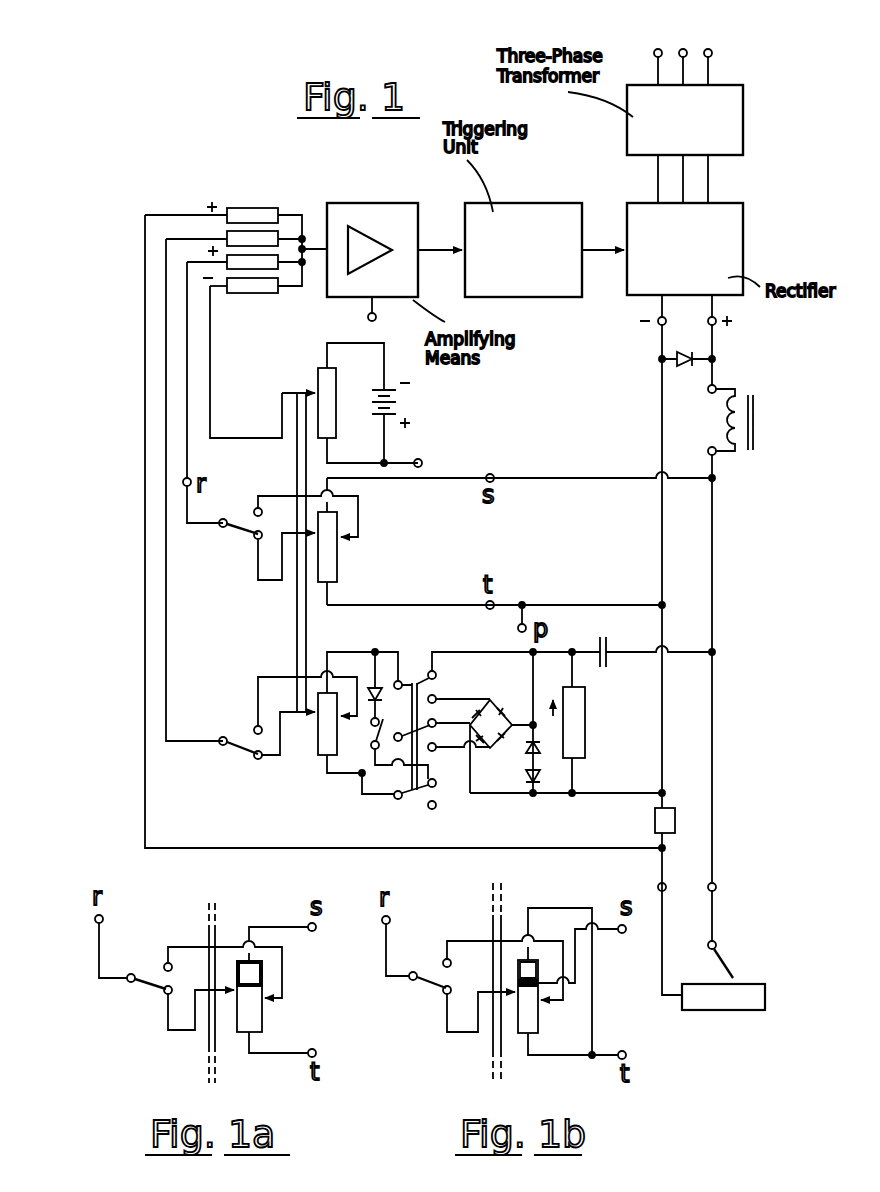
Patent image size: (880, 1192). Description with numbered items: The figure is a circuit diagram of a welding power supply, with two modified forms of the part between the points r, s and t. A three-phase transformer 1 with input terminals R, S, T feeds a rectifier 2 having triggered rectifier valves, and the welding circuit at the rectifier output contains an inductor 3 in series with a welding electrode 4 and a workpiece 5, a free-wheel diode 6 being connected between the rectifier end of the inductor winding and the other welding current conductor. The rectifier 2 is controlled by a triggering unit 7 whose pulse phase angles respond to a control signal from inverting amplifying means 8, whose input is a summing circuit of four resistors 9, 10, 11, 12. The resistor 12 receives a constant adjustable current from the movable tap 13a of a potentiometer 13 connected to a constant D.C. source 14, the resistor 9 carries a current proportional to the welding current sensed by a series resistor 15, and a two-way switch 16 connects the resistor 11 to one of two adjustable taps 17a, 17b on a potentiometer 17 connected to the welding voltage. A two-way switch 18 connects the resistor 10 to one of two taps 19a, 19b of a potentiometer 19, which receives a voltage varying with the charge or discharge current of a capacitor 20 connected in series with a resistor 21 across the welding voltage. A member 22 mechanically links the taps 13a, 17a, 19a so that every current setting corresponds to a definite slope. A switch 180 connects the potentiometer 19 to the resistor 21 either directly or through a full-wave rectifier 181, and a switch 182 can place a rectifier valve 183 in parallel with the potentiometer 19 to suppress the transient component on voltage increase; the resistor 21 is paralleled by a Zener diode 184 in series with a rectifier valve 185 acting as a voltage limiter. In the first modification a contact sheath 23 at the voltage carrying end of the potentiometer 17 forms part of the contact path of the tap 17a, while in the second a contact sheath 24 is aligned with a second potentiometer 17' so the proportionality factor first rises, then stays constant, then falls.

In FIG. 1, the three-phase transformer 1 is at (744, 106).
In FIG. 1, the rectifier 2 is at (745, 244).
In FIG. 1, the inductor 3 is at (758, 410).
In FIG. 1, the welding electrode 4 is at (725, 958).
In FIG. 1, the workpiece 5 is at (725, 1010).
In FIG. 1, the free-wheel diode 6 is at (683, 366).
In FIG. 1, the triggering unit 7 is at (535, 212).
In FIG. 1, the amplifying means 8 is at (381, 207).
In FIG. 1, the resistor 9 is at (239, 210).
In FIG. 1, the resistor 10 is at (273, 238).
In FIG. 1, the resistor 11 is at (227, 262).
In FIG. 1, the resistor 12 is at (272, 291).
In FIG. 1, the potentiometer 13 is at (317, 370).
In FIG. 1, the movable tap 13a is at (315, 392).
In FIG. 1, the source of constant D.C. voltage 14 is at (400, 405).
In FIG. 1, the resistor 15 is at (655, 820).
In FIG. 1, the two-way switch 16 is at (240, 527).
In FIG. 1, the potentiometer 17 is at (355, 541).
In FIG. 1A, the potentiometer 17 is at (285, 990).
In FIG. 1B, the potentiometer 17 is at (568, 997).
In FIG. 1, the adjustable tap 17a is at (313, 535).
In FIG. 1A, the adjustable tap 17a is at (228, 984).
In FIG. 1B, the adjustable tap 17a is at (470, 1000).
In FIG. 1, the adjustable tap 17b is at (340, 537).
In FIG. 1B, the second potentiometer 17' is at (544, 923).
In FIG. 1, the two-way switch 18 is at (242, 750).
In FIG. 1, the potentiometer 19 is at (317, 745).
In FIG. 1, the adjustable tap 19a is at (312, 708).
In FIG. 1, the adjustable tap 19b is at (345, 720).
In FIG. 1, the capacitor 20 is at (607, 662).
In FIG. 1, the resistor 21 is at (582, 717).
In FIG. 1, the member 22 is at (297, 465).
In FIG. 1A, the member 22 is at (208, 941).
In FIG. 1B, the member 22 is at (493, 933).
In FIG. 1A, the contact sheath 23 is at (261, 971).
In FIG. 1B, the contact sheath 24 is at (542, 982).
In FIG. 1, the switch 180 is at (412, 683).
In FIG. 1, the full-wave rectifier 181 is at (489, 702).
In FIG. 1, the switch 182 is at (382, 726).
In FIG. 1, the rectifier valve 183 is at (373, 691).
In FIG. 1, the Zener diode 184 is at (543, 778).
In FIG. 1, the rectifier valve 185 is at (524, 745).